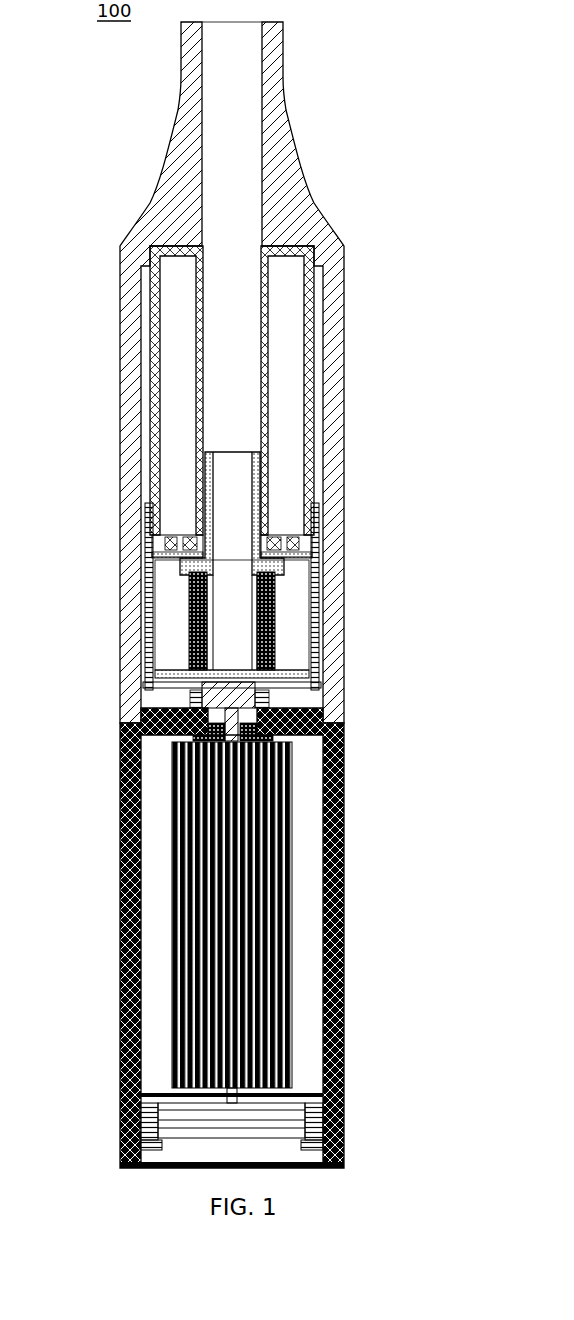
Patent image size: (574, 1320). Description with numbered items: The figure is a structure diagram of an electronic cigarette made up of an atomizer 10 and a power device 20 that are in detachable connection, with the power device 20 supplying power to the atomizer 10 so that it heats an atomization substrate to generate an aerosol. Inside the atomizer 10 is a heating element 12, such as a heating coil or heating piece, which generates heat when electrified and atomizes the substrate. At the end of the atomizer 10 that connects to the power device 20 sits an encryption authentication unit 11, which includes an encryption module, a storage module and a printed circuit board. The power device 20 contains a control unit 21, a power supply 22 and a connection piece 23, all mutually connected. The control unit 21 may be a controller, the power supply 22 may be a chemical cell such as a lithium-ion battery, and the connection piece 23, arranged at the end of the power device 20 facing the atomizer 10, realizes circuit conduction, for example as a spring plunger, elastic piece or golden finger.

The atomizer 10 is at (332, 226).
The heating element 12 is at (253, 617).
The encryption authentication unit 11 is at (300, 677).
The connection piece 23 is at (192, 740).
The power device 20 is at (362, 816).
The power supply 22 is at (193, 974).
The control unit 21 is at (292, 1128).